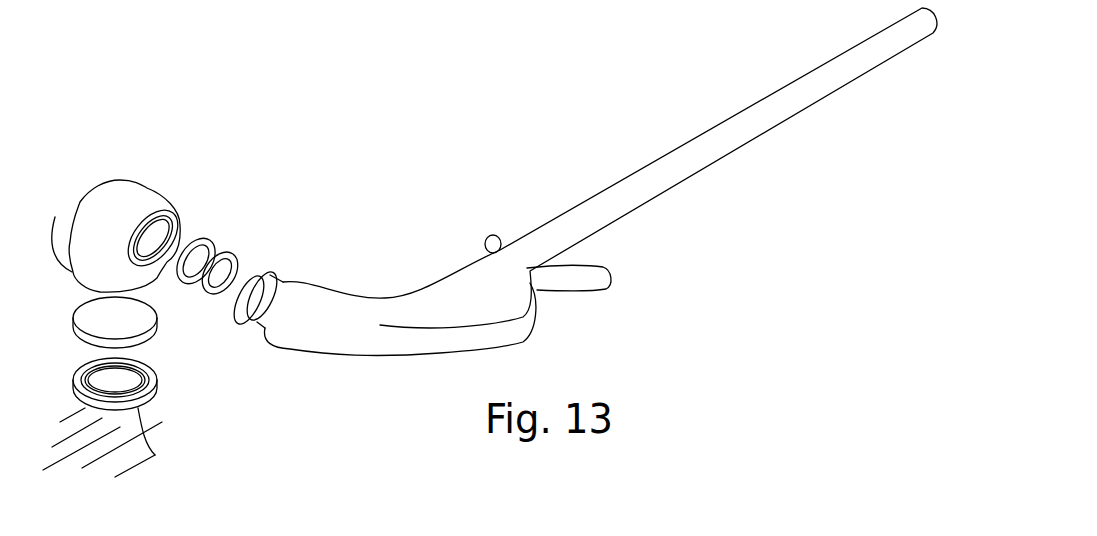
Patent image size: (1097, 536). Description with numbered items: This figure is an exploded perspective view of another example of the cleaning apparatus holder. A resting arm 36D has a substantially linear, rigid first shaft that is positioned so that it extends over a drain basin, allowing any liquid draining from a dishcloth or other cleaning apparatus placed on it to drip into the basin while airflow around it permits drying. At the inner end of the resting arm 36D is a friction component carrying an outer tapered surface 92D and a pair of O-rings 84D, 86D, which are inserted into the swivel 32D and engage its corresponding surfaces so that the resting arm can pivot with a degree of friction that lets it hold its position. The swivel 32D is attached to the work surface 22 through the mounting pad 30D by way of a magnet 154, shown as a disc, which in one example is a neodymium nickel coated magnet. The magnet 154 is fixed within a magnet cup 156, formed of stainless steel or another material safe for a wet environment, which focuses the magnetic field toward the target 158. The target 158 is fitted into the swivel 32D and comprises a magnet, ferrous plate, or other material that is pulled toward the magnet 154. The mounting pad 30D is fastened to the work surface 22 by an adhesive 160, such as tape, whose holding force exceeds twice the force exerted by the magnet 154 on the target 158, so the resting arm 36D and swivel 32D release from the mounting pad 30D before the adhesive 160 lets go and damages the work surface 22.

The work surface 22 is at (130, 470).
The mounting pad 30D is at (145, 395).
The swivel 32D is at (122, 180).
The resting arm 36D is at (592, 200).
The O-ring 84D is at (212, 240).
The O-ring 86D is at (232, 252).
The outer tapered surface 92D is at (278, 280).
The magnet 154 is at (155, 333).
The magnet cup 156 is at (148, 383).
The target 158 is at (60, 234).
The adhesive 160 is at (155, 455).